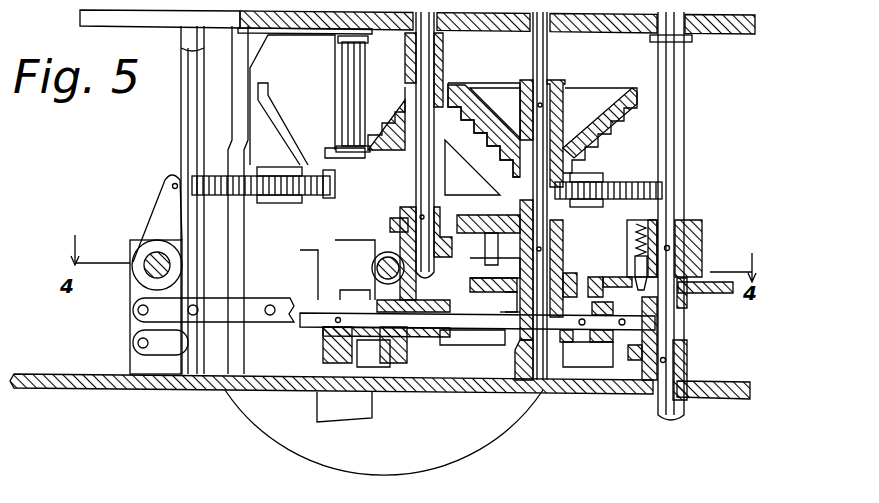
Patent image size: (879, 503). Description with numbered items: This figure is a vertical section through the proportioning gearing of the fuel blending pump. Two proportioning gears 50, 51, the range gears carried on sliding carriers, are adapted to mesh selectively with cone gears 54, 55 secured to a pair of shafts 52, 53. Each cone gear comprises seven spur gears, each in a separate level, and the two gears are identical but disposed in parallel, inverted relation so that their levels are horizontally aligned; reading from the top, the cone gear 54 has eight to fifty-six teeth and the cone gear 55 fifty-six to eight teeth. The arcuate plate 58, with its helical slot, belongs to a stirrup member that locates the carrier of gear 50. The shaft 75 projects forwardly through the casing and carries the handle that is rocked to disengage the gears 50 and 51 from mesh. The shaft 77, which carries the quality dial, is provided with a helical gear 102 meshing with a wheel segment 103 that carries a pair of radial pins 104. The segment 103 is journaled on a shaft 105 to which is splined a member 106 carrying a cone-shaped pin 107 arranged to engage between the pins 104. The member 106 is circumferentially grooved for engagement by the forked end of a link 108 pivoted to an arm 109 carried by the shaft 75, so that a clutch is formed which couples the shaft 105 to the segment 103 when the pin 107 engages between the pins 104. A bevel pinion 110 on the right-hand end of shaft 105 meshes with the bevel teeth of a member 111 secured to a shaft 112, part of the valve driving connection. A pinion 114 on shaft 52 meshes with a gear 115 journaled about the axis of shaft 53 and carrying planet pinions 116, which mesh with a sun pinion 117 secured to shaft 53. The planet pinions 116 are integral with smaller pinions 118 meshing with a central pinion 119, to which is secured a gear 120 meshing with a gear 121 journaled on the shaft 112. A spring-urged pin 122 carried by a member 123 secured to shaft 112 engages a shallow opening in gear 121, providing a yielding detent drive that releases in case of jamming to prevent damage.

The proportioning gear 50 is at (210, 182).
The proportioning gear 51 is at (666, 190).
The shaft 52 is at (428, 64).
The shaft 53 is at (550, 65).
The cone gear 54 is at (396, 127).
The cone gear 55 is at (602, 133).
The arcuate plate 58 is at (311, 84).
The shaft 75 is at (150, 262).
The shaft 77 is at (372, 270).
The helical gear 102 is at (378, 258).
The wheel segment 103 is at (378, 296).
The pins 104 is at (390, 360).
The shaft 105 is at (473, 333).
The member 106 is at (322, 337).
The cone-shaped pin 107 is at (375, 364).
The link 108 is at (256, 300).
The arm 109 is at (138, 290).
The bevel pinion 110 is at (645, 300).
The member 111 is at (637, 362).
The shaft 112 is at (672, 108).
The pinion 114 is at (395, 222).
The gear 115 is at (460, 222).
The planet pinions 116 is at (472, 266).
The sun pinion 117 is at (488, 234).
The smaller pinions 118 is at (470, 285).
The central pinion 119 is at (512, 289).
The gear 120 is at (518, 313).
The gear 121 is at (730, 294).
The spring-urged pin 122 is at (642, 268).
The member 123 is at (704, 233).